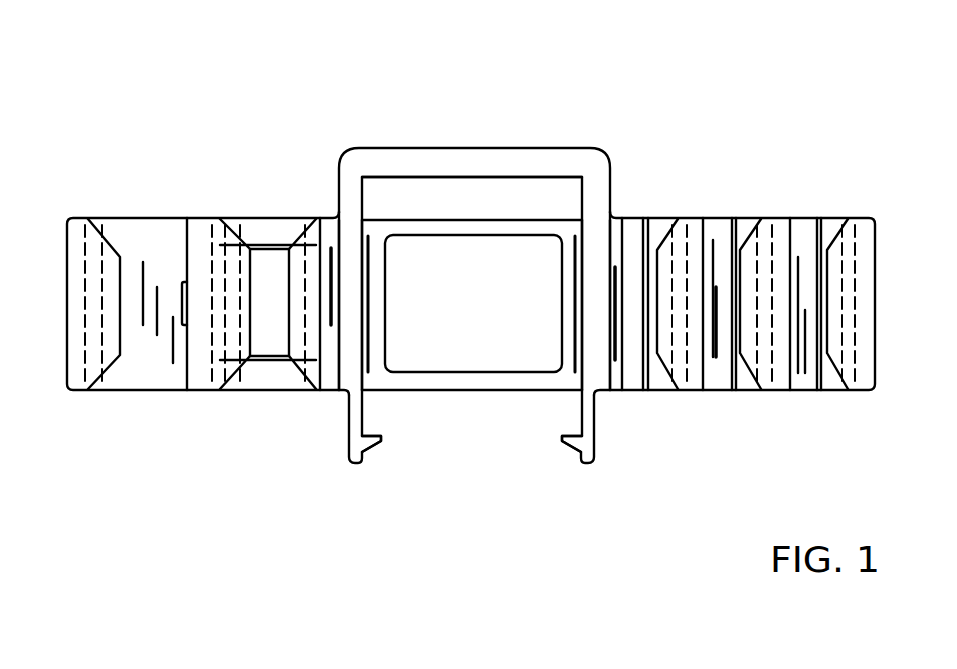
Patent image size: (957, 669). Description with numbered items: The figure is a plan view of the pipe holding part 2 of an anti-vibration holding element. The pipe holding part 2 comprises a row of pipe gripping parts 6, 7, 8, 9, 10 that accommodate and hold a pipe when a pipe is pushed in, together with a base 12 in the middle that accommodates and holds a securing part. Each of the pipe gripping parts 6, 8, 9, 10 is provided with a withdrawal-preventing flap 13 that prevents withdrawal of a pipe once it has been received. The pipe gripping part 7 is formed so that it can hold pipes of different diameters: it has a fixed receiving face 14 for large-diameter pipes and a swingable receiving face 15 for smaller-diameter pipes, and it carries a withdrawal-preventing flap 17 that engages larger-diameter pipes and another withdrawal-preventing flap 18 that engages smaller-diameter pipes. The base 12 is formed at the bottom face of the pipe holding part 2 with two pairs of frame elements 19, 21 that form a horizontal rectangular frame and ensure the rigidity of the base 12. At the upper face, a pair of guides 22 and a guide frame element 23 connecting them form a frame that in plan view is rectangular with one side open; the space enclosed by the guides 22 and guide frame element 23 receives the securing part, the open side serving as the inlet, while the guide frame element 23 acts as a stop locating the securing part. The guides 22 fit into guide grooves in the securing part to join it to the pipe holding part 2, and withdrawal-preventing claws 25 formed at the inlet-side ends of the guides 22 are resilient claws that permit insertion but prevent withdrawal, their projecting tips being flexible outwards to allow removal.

The pipe holding part 2 is at (806, 88).
The pipe gripping part 6 is at (154, 228).
The pipe gripping part 7 is at (270, 250).
The pipe gripping part 8 is at (636, 238).
The pipe gripping part 9 is at (752, 212).
The pipe gripping part 10 is at (840, 209).
The base 12 is at (512, 118).
The withdrawal-preventing flap 13 is at (110, 263).
The fixed receiving face 14 is at (250, 377).
The swingable receiving face 15 is at (270, 340).
The withdrawal-preventing flap 17 is at (297, 272).
The withdrawal-preventing flap 18 is at (243, 258).
The frame element 19 is at (487, 227).
The frame element 21 is at (565, 318).
The guide 22 is at (353, 320).
The guide frame element 23 is at (437, 167).
The withdrawal-preventing claw 25 is at (362, 447).